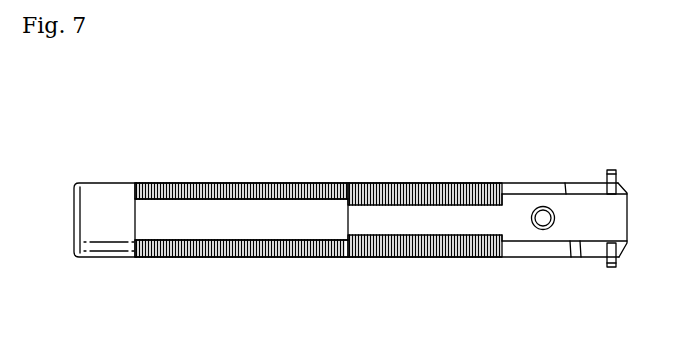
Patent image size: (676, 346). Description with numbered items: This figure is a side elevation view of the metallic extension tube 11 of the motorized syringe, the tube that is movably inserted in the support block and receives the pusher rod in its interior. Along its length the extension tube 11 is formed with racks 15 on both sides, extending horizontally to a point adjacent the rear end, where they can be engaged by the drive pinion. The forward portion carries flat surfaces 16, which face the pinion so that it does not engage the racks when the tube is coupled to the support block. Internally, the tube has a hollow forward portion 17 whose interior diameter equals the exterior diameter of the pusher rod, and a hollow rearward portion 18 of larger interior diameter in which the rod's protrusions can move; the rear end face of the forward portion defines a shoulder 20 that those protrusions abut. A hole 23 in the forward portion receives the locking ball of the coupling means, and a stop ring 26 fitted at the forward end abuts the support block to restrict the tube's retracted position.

The extension tube 11 is at (146, 152).
The racks 15 is at (232, 183).
The flat surfaces 16 is at (528, 183).
The hollow forward portion 17 is at (450, 218).
The hollow rearward portion 18 is at (273, 220).
The shoulder 20 is at (348, 212).
The hole 23 is at (545, 220).
The stop ring 26 is at (612, 170).